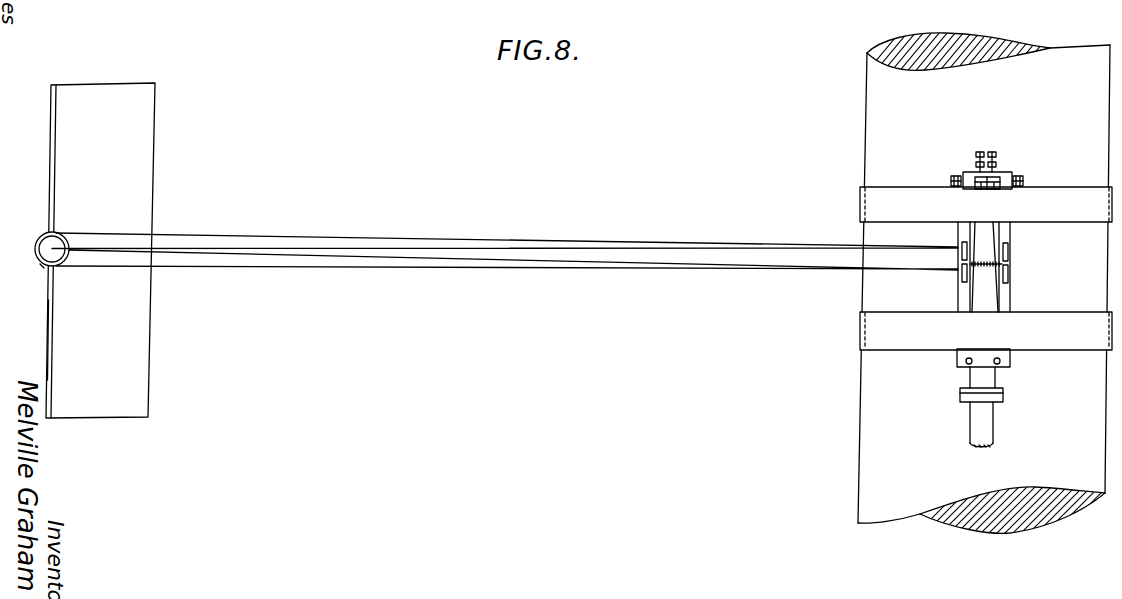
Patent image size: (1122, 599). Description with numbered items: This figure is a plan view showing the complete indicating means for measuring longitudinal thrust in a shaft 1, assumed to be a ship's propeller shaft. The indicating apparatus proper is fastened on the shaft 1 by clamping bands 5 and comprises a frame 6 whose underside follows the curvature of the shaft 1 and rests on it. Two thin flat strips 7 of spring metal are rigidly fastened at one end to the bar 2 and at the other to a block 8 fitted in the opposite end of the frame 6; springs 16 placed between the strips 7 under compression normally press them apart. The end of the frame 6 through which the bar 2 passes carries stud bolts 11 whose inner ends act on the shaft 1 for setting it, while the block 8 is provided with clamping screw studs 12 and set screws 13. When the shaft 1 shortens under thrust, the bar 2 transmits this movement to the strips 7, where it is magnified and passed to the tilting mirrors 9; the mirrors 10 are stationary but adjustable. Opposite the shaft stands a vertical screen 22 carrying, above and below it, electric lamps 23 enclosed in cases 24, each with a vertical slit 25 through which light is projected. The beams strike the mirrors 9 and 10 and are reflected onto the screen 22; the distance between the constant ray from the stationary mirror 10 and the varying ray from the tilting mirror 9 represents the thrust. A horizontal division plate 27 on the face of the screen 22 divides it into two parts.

The shaft 1 is at (986, 280).
The bar 2 is at (987, 420).
The clamping bands 5 is at (1075, 200).
The frame 6 is at (969, 185).
The strips 7 is at (995, 240).
The block 8 is at (978, 177).
The tilting mirror 9 is at (960, 278).
The stationary mirror 10 is at (960, 247).
The stud bolts 11 is at (996, 357).
The clamping screw studs 12 is at (953, 177).
The set screws 13 is at (988, 152).
The springs 16 is at (985, 263).
The screen 22 is at (48, 347).
The electric lamps 23 is at (50, 242).
The cases 24 is at (42, 260).
The vertical slit 25 is at (72, 247).
The division plate 27 is at (140, 149).